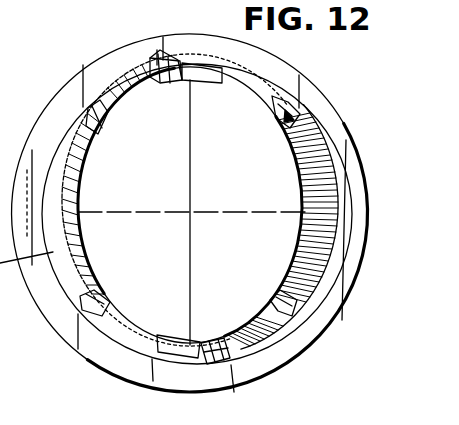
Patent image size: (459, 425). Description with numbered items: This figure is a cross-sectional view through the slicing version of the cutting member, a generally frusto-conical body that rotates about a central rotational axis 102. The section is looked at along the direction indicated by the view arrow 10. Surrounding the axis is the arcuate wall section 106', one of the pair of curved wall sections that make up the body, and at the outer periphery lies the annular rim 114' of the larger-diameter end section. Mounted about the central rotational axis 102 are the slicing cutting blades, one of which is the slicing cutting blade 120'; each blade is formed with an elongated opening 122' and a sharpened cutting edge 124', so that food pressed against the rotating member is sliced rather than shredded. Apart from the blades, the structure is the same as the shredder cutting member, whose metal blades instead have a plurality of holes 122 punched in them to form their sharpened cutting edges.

The view direction arrow 10 is at (0, 12).
The central rotational axis 102 is at (190, 212).
The arcuate wall section 106' is at (232, 201).
The annular rim 114' is at (190, 213).
The slicing cutting blade 120' is at (238, 238).
The holes 122 is at (174, 108).
The elongated opening 122' is at (245, 363).
The sharpened cutting edge 124' is at (145, 230).